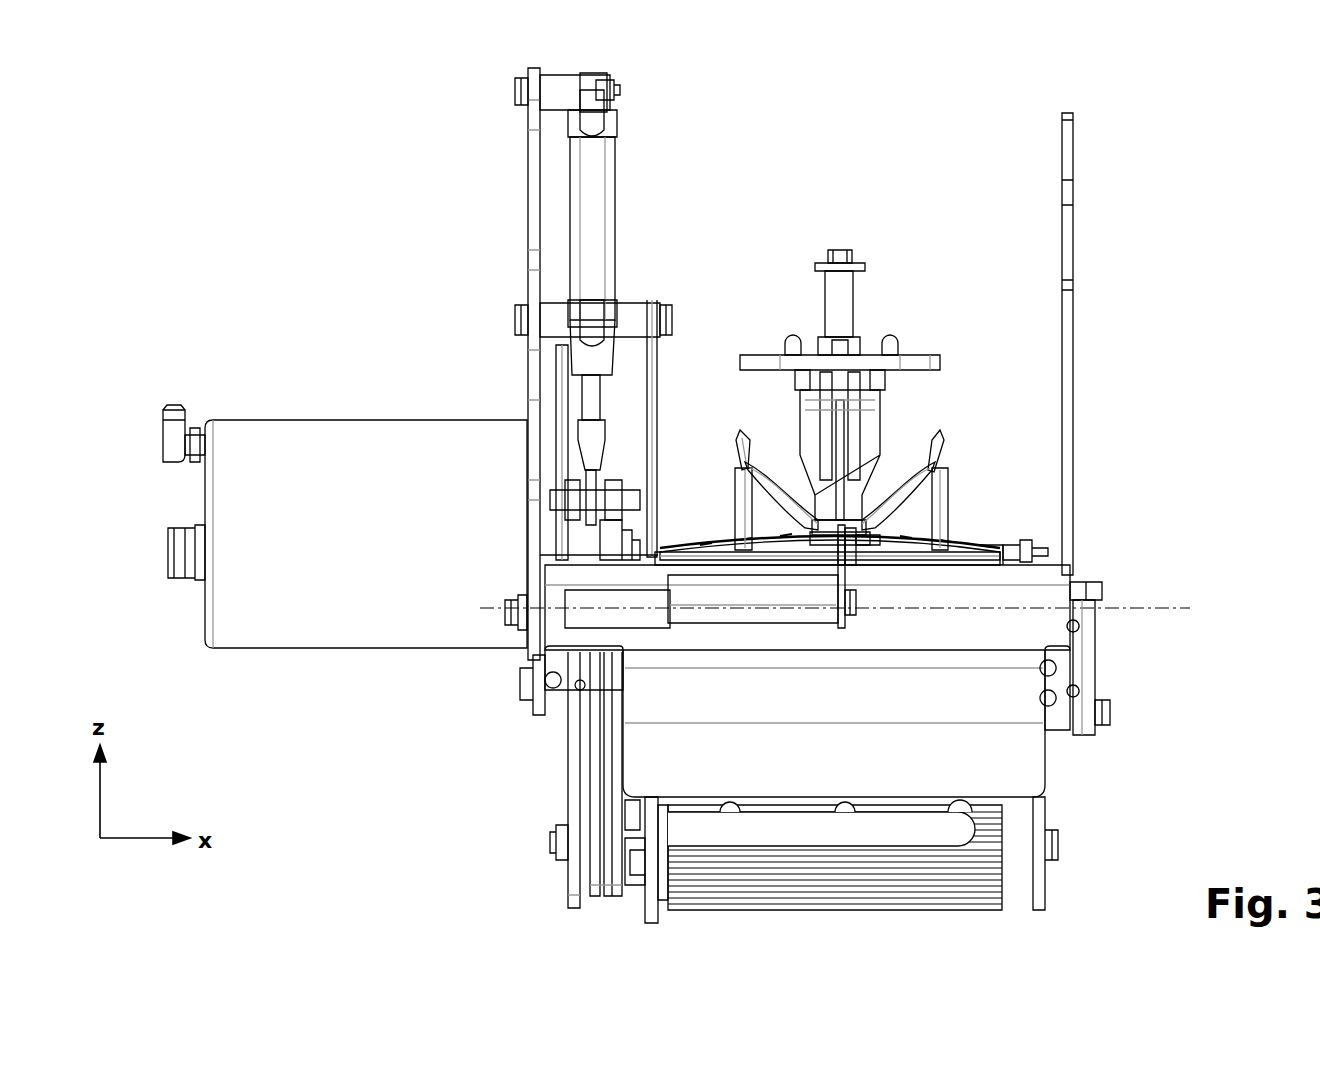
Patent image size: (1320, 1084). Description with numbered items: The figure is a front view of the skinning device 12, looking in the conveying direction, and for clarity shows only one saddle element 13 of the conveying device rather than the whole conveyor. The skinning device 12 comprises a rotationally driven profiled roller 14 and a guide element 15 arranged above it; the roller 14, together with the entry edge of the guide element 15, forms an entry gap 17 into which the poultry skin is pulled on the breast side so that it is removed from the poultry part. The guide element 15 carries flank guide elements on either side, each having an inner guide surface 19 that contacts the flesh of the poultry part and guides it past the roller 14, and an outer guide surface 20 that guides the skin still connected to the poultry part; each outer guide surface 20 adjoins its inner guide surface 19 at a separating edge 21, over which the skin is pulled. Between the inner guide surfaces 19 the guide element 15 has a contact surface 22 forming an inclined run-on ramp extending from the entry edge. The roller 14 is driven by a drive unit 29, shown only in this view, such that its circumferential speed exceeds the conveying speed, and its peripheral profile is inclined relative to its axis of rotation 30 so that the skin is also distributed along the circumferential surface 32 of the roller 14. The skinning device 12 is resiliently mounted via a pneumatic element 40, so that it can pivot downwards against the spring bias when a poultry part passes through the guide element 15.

The skinning device 12 is at (938, 160).
The saddle element 13 is at (902, 400).
The profiled roller 14 is at (965, 550).
The guide element 15 is at (950, 452).
The entry gap 17 is at (872, 540).
The inner guide surface 19 is at (762, 485).
The outer guide surface 20 is at (758, 512).
The separating edge 21 is at (780, 515).
The contact surface 22 is at (858, 540).
The drive unit 29 is at (297, 445).
The axis of rotation 30 is at (1173, 617).
The circumferential surface 32 is at (990, 548).
The pneumatic element 40 is at (604, 168).